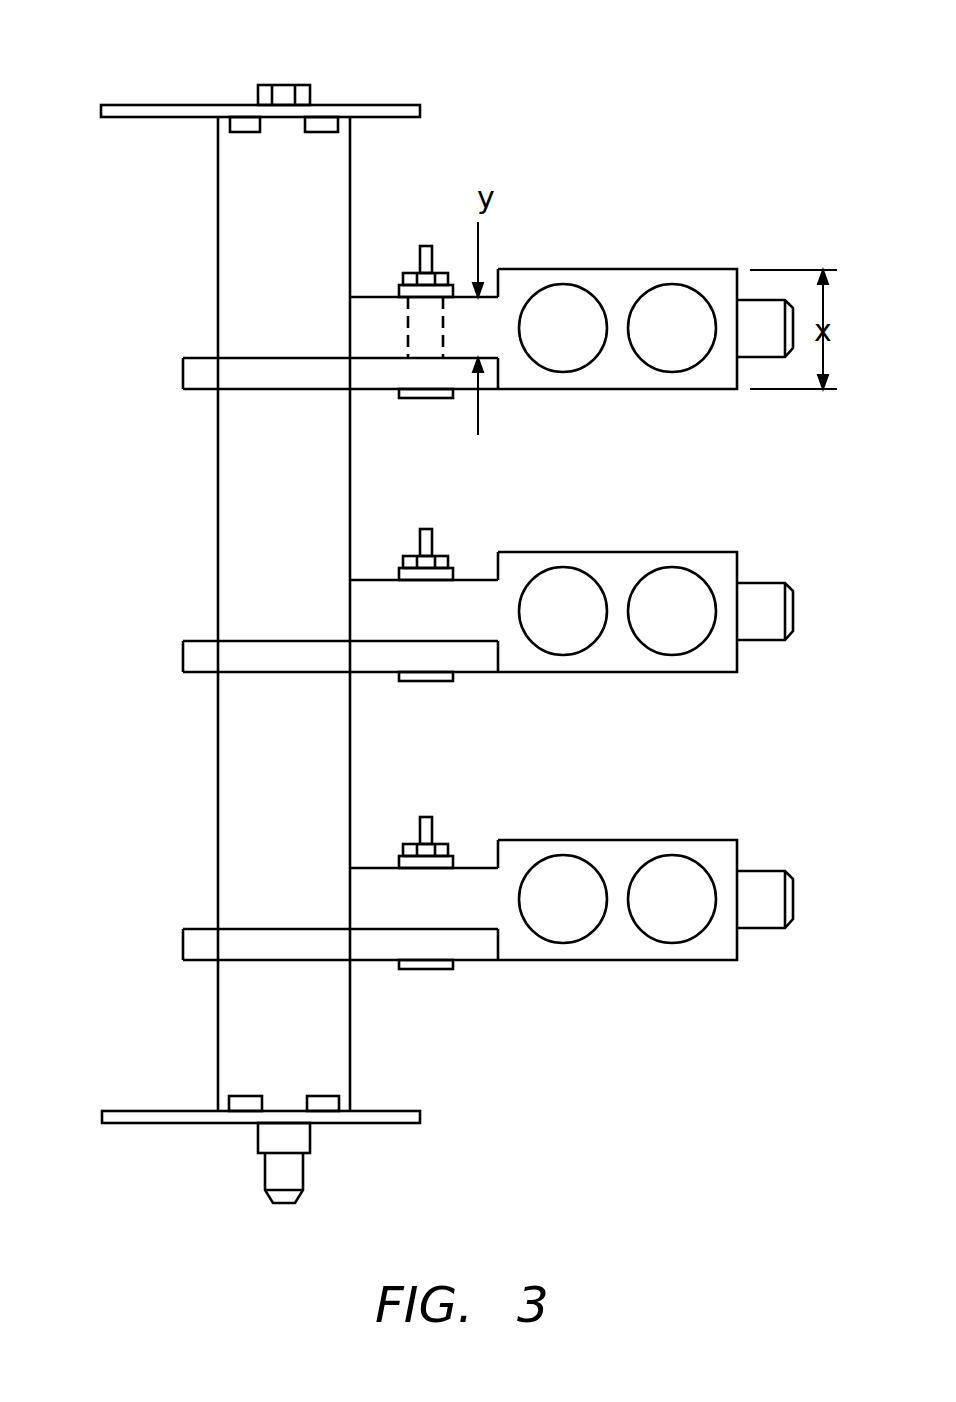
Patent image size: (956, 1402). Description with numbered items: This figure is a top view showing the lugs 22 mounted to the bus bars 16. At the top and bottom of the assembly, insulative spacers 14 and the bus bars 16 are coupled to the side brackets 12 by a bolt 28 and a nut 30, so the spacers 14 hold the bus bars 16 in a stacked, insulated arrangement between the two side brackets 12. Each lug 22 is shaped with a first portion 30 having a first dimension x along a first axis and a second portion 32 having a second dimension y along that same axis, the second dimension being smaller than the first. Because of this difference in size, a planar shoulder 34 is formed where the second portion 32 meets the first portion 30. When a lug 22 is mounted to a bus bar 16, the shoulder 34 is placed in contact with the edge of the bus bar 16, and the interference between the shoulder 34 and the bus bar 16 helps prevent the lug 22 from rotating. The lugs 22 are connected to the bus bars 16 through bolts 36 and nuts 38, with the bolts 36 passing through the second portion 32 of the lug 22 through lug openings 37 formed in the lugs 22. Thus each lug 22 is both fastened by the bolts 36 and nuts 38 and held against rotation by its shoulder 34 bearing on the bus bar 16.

The side bracket 12 is at (147, 105).
The insulative spacer 14 is at (228, 243).
The bus bar 16 is at (190, 373).
The lug 22 is at (717, 961).
The bolt 28 is at (288, 85).
The nut / first portion 30 is at (724, 282).
The second portion 32 is at (392, 296).
The planar shoulder 34 is at (497, 280).
The bolt 36 is at (421, 399).
The lug opening 37 is at (407, 333).
The nut 38 is at (443, 268).